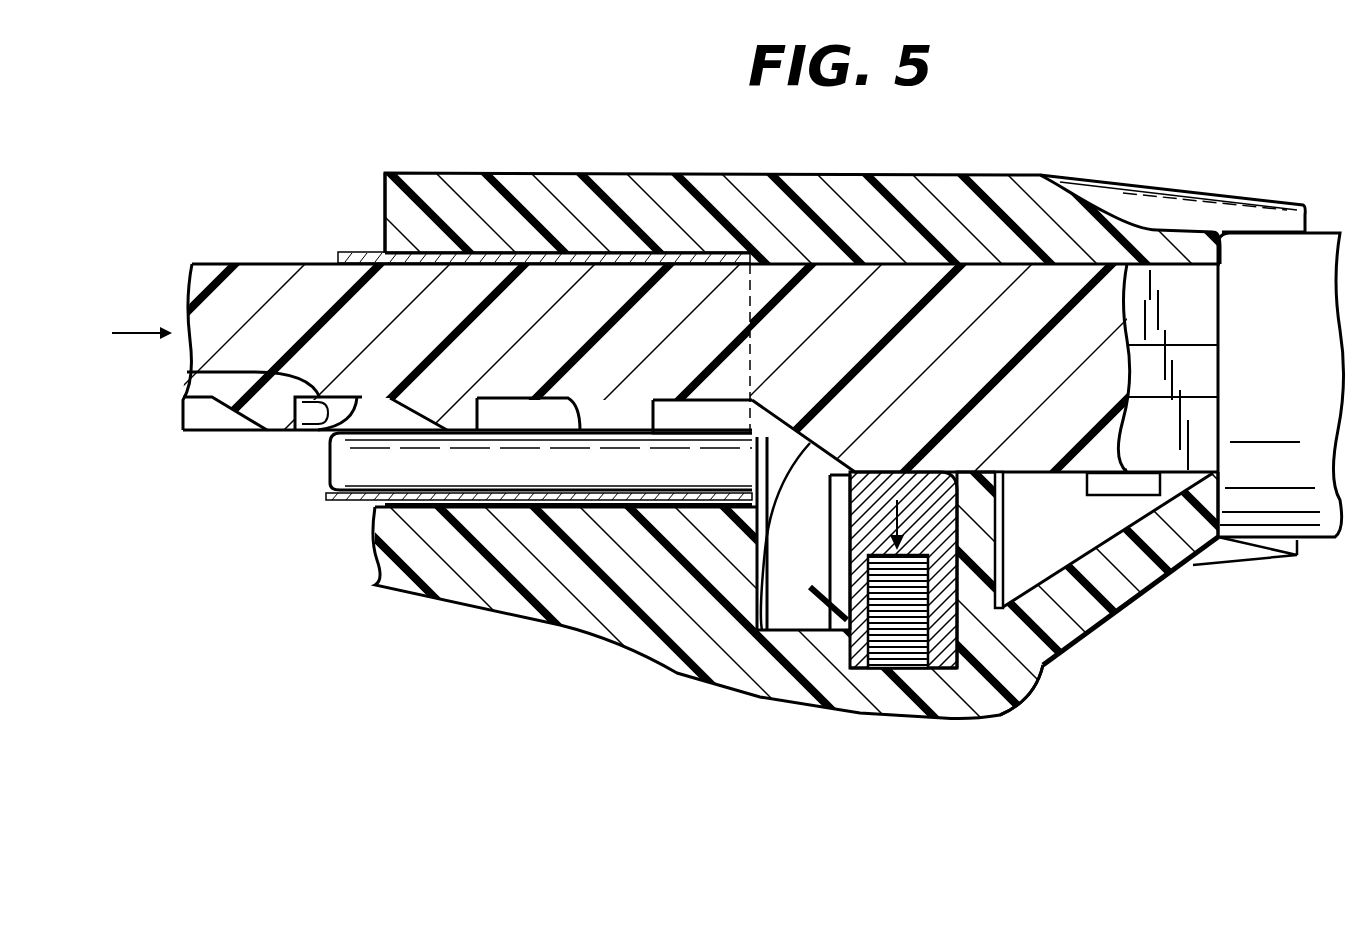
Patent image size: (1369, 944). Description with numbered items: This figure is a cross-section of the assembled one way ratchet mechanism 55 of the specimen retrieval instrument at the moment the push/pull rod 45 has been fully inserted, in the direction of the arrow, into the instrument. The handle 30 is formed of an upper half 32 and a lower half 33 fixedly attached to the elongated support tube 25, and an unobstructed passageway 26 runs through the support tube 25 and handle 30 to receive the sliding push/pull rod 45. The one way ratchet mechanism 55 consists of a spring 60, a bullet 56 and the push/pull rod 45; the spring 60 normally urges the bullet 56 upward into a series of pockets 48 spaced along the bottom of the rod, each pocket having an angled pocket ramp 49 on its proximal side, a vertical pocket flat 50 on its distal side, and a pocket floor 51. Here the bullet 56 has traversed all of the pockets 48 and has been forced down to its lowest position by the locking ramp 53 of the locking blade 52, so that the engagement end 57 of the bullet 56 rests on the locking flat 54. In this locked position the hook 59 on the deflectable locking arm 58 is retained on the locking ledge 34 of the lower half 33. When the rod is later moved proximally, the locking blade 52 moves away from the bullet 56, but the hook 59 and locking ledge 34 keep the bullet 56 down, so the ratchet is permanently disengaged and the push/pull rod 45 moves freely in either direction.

The elongated support tube 25 is at (323, 498).
The passageway 26 is at (423, 263).
The handle 30 is at (553, 173).
The upper half 32 is at (415, 172).
The lower half 33 is at (372, 567).
The locking ledge 34 is at (808, 640).
The push/pull rod 45 is at (180, 430).
The pockets 48 is at (513, 402).
The pocket ramp 49 is at (407, 398).
The pocket flat 50 is at (255, 372).
The pocket floor 51 is at (313, 432).
The locking blade 52 is at (1018, 480).
The locking ramp 53 is at (760, 480).
The locking flat 54 is at (1165, 568).
The one way ratchet mechanism 55 is at (580, 763).
The bullet 56 is at (1040, 670).
The engagement end 57 is at (883, 472).
The deflectable locking arm 58 is at (850, 590).
The hook 59 is at (840, 640).
The spring 60 is at (947, 650).